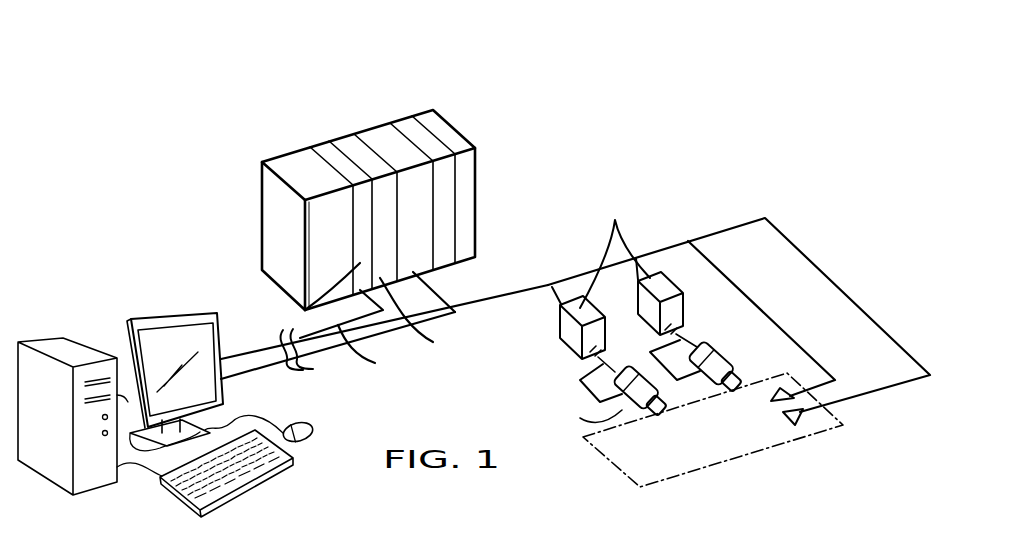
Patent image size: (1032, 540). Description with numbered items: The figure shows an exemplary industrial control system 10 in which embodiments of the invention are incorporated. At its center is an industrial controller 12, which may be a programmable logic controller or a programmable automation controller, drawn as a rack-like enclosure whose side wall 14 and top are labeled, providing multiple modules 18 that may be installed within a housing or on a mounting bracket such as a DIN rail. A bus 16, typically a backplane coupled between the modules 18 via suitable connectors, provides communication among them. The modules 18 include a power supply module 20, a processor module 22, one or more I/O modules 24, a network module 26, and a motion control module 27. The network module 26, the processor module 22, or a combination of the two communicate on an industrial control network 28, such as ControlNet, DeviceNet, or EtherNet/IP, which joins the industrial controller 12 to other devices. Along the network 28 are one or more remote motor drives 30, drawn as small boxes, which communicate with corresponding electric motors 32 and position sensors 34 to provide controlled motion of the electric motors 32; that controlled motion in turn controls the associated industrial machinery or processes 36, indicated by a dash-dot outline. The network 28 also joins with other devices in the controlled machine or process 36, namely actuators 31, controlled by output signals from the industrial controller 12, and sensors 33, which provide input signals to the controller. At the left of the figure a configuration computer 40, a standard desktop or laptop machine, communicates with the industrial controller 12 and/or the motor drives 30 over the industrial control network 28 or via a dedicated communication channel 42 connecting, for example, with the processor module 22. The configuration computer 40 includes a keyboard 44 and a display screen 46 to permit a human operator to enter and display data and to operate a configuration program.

The industrial control system 10 is at (735, 146).
The industrial controller 12 is at (368, 177).
The side wall 14 is at (278, 210).
The bus 16 is at (256, 165).
The modules 18 is at (431, 166).
The power supply module 20 is at (318, 235).
The processor module 22 is at (300, 302).
The I/O module 24 is at (462, 200).
The network module 26 is at (433, 242).
The motion control module 27 is at (424, 318).
The industrial control network 28 is at (543, 278).
The remote motor drives 30 is at (624, 283).
The actuators 31 is at (780, 403).
The electric motors 32 is at (725, 362).
The sensors 33 is at (798, 423).
The position sensors 34 is at (697, 347).
The industrial machinery or processes 36 is at (740, 441).
The configuration computer 40 is at (53, 342).
The dedicated communication channel 42 is at (374, 354).
The keyboard 44 is at (180, 490).
The display screen 46 is at (178, 343).